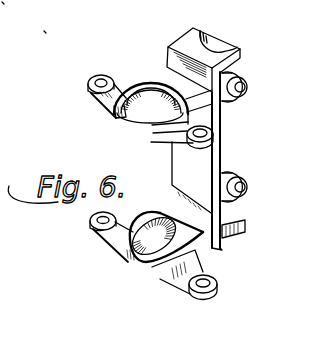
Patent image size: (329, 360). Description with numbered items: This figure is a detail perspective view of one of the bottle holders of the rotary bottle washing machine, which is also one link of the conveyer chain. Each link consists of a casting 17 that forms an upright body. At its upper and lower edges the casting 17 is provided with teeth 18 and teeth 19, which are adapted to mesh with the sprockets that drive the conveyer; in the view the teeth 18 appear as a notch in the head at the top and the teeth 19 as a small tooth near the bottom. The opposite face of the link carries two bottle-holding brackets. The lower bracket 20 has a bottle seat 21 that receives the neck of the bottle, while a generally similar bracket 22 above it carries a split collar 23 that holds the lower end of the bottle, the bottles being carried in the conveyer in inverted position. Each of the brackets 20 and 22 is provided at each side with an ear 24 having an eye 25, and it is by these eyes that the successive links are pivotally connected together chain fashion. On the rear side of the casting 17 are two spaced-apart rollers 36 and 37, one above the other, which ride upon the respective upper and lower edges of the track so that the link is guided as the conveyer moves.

The casting 17 is at (222, 145).
The teeth 18 is at (206, 31).
The teeth 19 is at (248, 236).
The lower bracket 20 is at (148, 288).
The bottle seat 21 is at (122, 258).
The bracket 22 is at (166, 68).
The split collar 23 is at (126, 121).
The ear 24 is at (108, 101).
The eye 25 is at (94, 84).
The roller 36 is at (248, 93).
The roller 37 is at (250, 185).